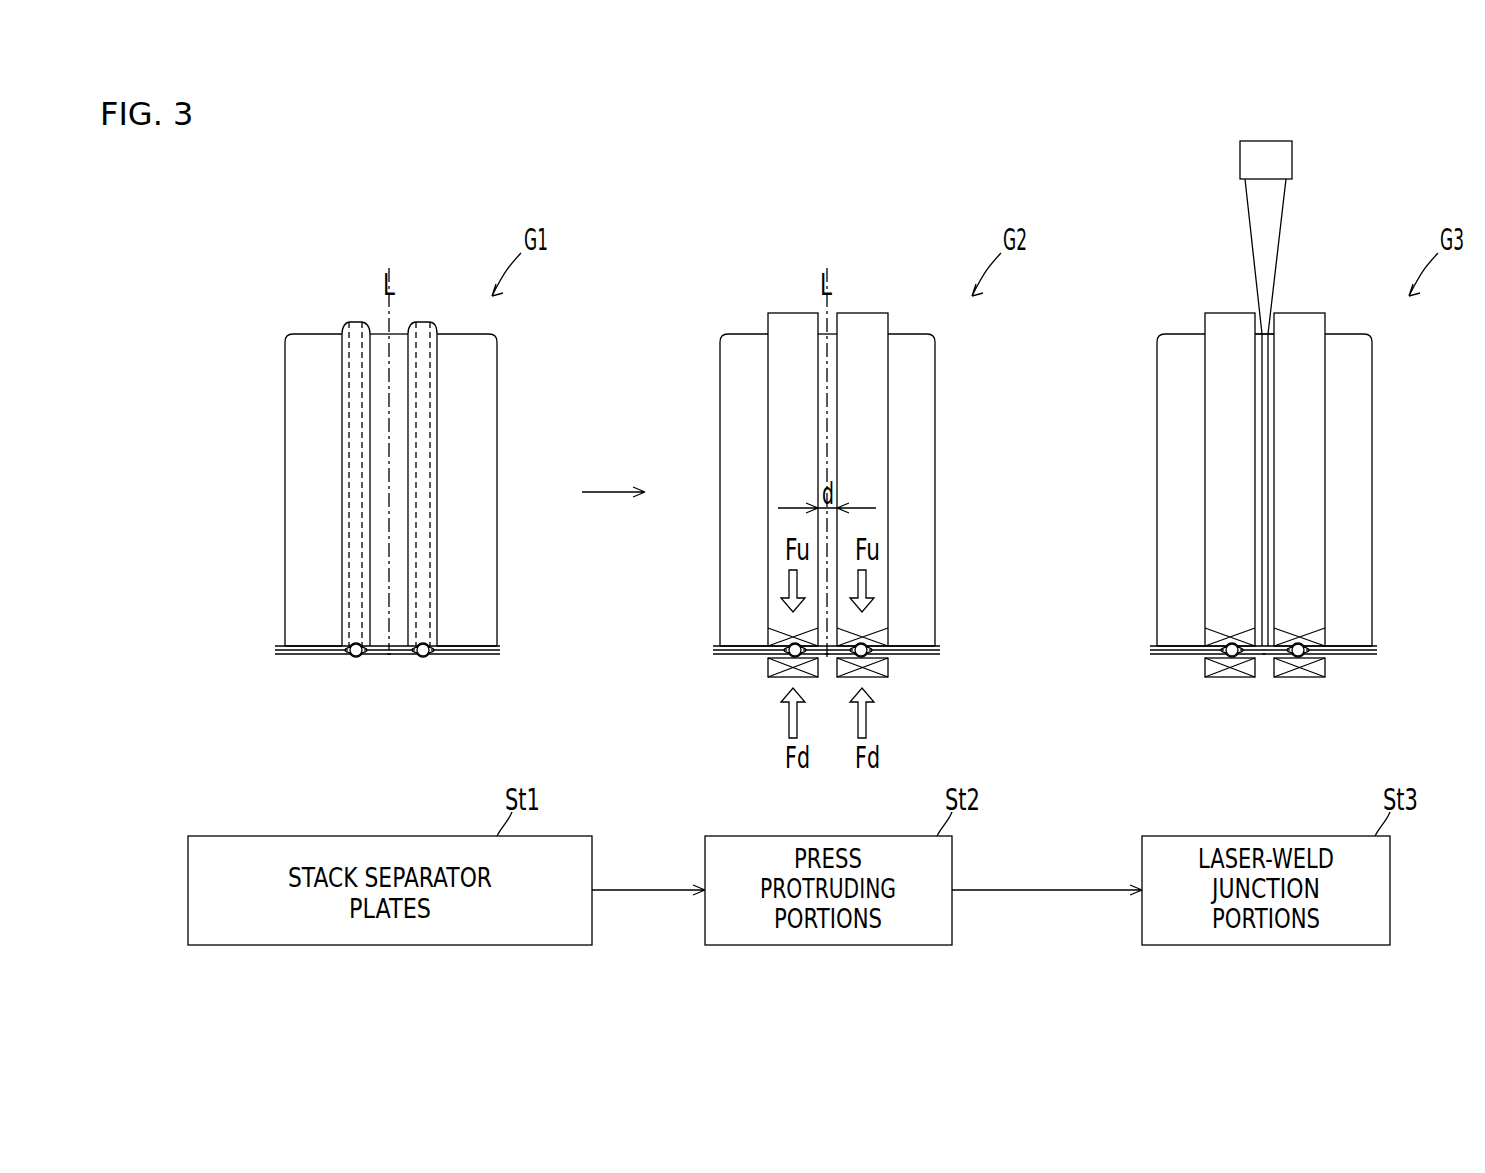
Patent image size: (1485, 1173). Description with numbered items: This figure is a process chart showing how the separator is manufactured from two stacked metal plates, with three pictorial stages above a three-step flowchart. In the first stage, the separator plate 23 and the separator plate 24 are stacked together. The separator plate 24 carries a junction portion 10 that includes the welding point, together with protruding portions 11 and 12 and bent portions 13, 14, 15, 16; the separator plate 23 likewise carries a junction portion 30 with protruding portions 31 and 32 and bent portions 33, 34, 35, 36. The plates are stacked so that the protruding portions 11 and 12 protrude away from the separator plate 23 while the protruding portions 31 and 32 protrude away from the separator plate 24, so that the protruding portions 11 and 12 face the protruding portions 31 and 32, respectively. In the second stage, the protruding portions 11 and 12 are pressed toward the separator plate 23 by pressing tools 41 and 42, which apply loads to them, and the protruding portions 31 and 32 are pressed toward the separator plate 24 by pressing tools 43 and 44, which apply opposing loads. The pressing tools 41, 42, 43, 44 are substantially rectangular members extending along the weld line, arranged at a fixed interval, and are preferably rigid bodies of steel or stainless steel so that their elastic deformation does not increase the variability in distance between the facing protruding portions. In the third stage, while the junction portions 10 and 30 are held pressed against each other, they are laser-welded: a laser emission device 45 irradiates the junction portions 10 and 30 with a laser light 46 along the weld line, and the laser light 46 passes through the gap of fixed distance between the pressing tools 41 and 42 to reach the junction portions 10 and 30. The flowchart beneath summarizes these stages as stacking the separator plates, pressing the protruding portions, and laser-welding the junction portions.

The junction portion 10 is at (401, 332).
The protruding portion 11 is at (433, 641).
The protruding portion 12 is at (347, 641).
The bent portion 13 is at (347, 648).
The bent portion 14 is at (357, 641).
The bent portion 15 is at (423, 641).
The bent portion 16 is at (433, 648).
The separator plate 23 is at (262, 659).
The separator plate 24 is at (262, 649).
The junction portion 30 is at (389, 657).
The protruding portion 31 is at (431, 658).
The protruding portion 32 is at (356, 658).
The bent portion 33 is at (350, 658).
The bent portion 34 is at (368, 658).
The bent portion 35 is at (416, 658).
The bent portion 36 is at (438, 657).
The pressing tool 41 is at (888, 318).
The pressing tool 42 is at (768, 318).
The pressing tool 43 is at (880, 677).
The pressing tool 44 is at (775, 677).
The laser emission device 45 is at (1293, 156).
The laser light 46 is at (1282, 210).